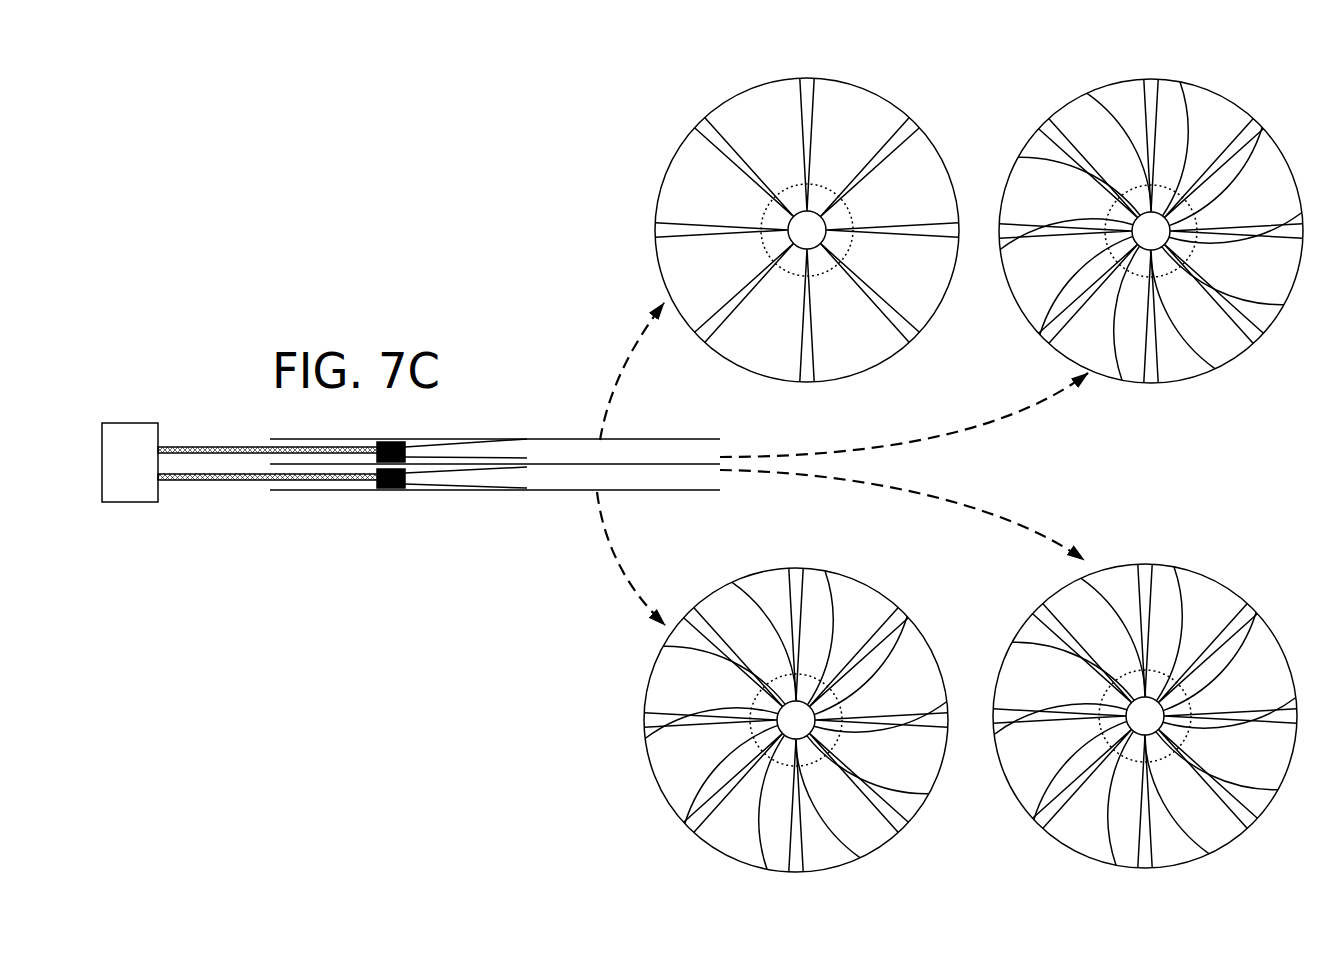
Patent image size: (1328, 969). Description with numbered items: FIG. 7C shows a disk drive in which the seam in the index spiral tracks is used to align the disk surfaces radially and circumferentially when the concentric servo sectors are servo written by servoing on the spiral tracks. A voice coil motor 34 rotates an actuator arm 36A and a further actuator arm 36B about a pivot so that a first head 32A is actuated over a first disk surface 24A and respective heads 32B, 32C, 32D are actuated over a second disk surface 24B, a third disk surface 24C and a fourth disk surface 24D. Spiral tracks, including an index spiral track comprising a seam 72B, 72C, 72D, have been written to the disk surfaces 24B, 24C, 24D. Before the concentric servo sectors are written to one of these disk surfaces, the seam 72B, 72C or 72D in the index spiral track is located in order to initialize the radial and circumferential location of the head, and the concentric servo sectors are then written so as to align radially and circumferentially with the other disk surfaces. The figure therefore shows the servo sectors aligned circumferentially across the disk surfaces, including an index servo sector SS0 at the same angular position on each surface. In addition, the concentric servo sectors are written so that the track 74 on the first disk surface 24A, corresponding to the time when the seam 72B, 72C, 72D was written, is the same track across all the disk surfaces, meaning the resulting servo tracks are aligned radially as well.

The voice coil motor 34 is at (130, 423).
The actuator arm 36A is at (237, 447).
The actuator arm 36B is at (185, 474).
The first head 32A is at (529, 437).
The head 32B is at (530, 456).
The head 32C is at (530, 470).
The head 32D is at (528, 492).
The first disk surface 24A is at (691, 111).
The second disk surface 24B is at (1250, 98).
The third disk surface 24C is at (1251, 839).
The fourth disk surface 24D is at (905, 842).
The track 74 is at (827, 187).
The seam 72B is at (1172, 189).
The seam 72C is at (1167, 674).
The seam 72D is at (815, 677).